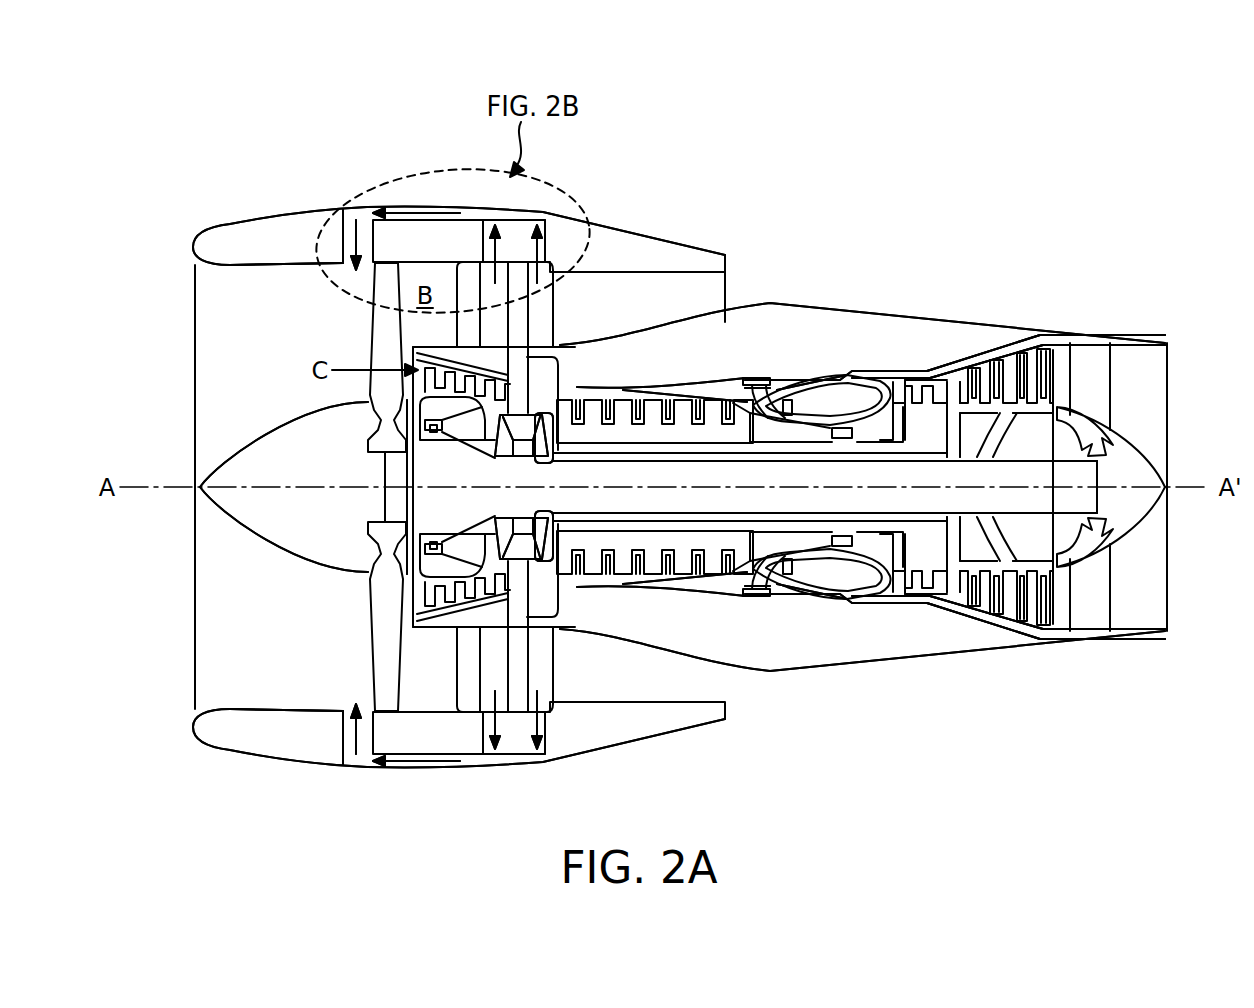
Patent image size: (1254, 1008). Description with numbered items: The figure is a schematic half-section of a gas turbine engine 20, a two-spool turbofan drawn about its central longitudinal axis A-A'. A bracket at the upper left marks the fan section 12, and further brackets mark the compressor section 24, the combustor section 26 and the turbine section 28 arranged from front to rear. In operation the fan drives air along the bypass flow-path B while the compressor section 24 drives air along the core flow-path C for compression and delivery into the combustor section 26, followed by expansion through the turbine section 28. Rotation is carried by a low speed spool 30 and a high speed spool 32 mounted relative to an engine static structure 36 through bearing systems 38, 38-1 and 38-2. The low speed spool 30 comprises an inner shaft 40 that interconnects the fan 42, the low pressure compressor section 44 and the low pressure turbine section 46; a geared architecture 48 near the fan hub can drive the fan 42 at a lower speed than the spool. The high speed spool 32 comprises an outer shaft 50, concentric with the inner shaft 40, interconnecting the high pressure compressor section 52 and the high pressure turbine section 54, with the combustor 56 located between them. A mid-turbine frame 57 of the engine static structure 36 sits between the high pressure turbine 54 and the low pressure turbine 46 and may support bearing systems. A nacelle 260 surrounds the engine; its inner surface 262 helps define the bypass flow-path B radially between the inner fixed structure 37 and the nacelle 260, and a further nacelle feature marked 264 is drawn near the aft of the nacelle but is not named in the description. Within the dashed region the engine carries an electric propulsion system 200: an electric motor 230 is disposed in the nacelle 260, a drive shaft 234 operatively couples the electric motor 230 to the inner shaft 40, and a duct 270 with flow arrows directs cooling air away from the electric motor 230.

The fan section 12 is at (545, 81).
The gas turbine engine 20 is at (890, 172).
The compressor section 24 is at (420, 333).
The combustor section 26 is at (907, 289).
The turbine section 28 is at (908, 287).
The low speed spool 30 is at (790, 493).
The high speed spool 32 is at (893, 523).
The engine static structure 36 is at (735, 587).
The inner fixed structure 37 is at (668, 332).
The bearing system 38 is at (507, 514).
The bearing system 38-1 is at (433, 432).
The bearing system 38-2 is at (844, 439).
The inner shaft 40 is at (647, 500).
The fan 42 is at (395, 633).
The low pressure compressor section 44 is at (430, 593).
The low pressure turbine section 46 is at (1017, 593).
The geared architecture 48 is at (401, 540).
The outer shaft 50 is at (812, 503).
The high pressure compressor section 52 is at (610, 537).
The high pressure turbine section 54 is at (934, 552).
The combustor 56 is at (858, 396).
The mid-turbine frame 57 is at (957, 362).
The electric propulsion system 200 is at (598, 165).
The electric motor 230 is at (552, 235).
The drive shaft 234 is at (540, 353).
The nacelle 260 is at (292, 210).
The inner surface 262 is at (315, 268).
The bypass duct 264 is at (590, 230).
The duct 270 is at (362, 222).